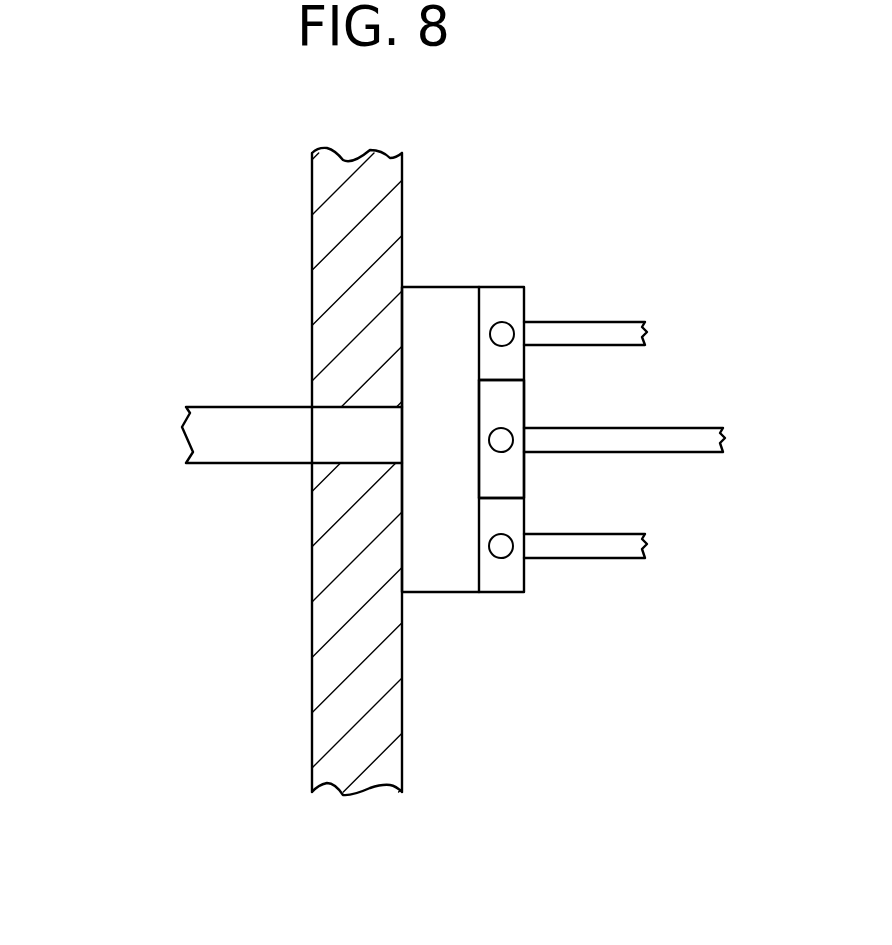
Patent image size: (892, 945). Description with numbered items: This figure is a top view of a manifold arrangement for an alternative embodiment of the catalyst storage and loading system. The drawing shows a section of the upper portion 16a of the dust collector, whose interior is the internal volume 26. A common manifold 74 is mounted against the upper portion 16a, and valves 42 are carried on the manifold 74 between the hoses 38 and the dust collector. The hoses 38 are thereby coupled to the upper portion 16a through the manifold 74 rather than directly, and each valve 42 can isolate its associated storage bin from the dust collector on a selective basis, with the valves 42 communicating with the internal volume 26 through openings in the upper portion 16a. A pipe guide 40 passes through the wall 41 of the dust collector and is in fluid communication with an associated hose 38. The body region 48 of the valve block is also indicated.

The upper portion 16a is at (438, 467).
The internal volume 26 is at (120, 467).
The hose 38 is at (593, 347).
The pipe guide 40 is at (238, 417).
The wall 41 is at (390, 218).
The valve 42 is at (515, 300).
The block body 48 is at (515, 482).
The common manifold 74 is at (423, 298).